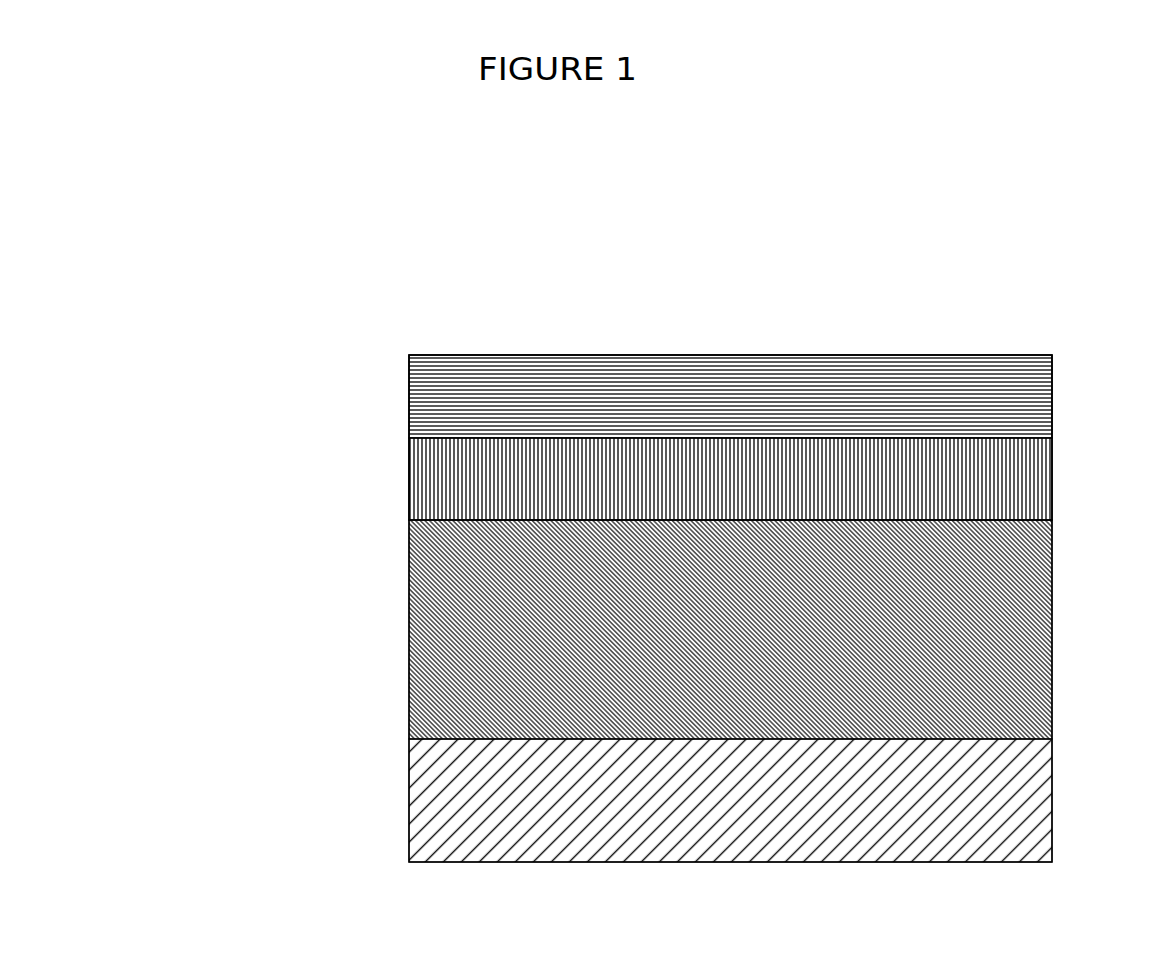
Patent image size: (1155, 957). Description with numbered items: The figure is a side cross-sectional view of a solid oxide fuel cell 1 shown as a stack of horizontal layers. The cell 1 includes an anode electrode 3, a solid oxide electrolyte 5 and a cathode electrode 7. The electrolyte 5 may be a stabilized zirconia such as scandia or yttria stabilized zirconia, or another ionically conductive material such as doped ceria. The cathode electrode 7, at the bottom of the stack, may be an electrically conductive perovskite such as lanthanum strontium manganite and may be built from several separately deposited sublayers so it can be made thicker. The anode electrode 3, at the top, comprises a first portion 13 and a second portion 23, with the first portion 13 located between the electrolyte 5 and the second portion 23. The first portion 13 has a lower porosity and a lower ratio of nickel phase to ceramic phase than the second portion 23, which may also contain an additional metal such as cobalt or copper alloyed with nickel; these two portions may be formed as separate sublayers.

The solid oxide fuel cell 1 is at (783, 246).
The anode electrode 3 is at (1078, 355).
The second portion of the anode electrode 23 is at (410, 403).
The first portion of the anode electrode 13 is at (410, 475).
The solid oxide electrolyte 5 is at (409, 642).
The cathode electrode 7 is at (409, 775).